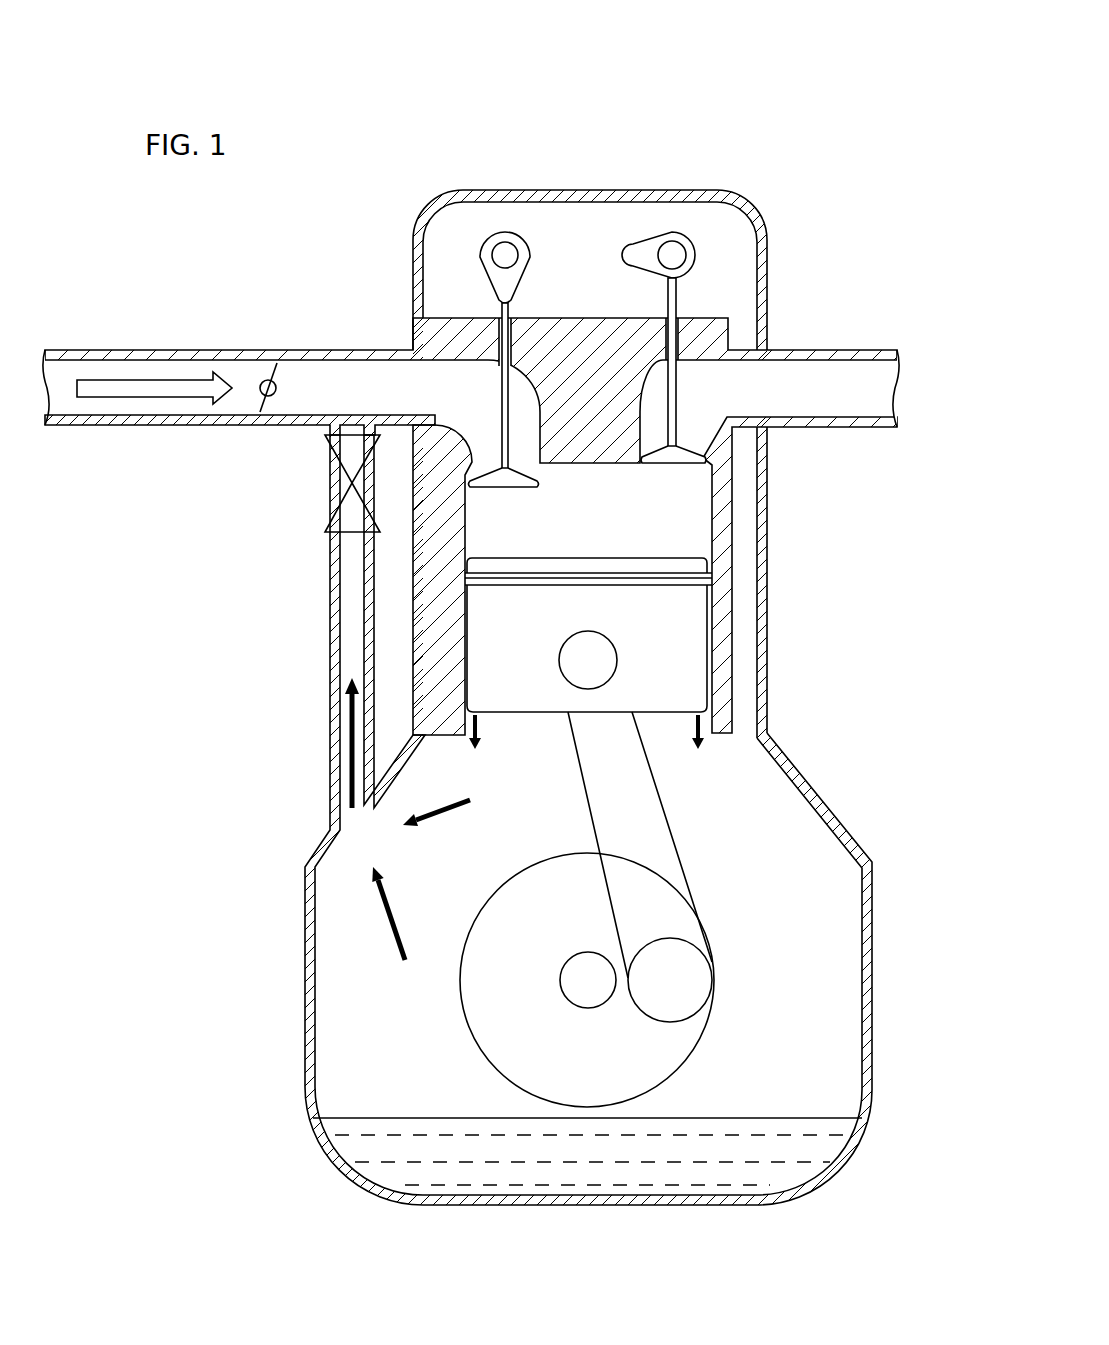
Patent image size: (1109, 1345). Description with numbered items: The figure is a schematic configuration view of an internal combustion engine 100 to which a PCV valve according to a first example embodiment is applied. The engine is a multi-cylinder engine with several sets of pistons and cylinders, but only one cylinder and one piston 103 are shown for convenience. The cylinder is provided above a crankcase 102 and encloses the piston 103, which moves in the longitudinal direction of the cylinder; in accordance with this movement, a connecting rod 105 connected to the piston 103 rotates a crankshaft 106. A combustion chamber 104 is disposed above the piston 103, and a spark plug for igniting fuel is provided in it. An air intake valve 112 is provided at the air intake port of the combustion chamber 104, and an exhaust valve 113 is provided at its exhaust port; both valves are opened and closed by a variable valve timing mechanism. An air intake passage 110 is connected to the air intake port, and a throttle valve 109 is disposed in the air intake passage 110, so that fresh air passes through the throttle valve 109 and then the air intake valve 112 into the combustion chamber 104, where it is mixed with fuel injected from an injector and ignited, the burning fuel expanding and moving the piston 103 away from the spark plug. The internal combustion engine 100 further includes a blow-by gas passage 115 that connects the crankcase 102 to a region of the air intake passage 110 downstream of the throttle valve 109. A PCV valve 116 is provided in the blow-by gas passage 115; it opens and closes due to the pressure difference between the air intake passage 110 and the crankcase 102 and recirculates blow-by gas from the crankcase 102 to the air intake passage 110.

The internal combustion engine 100 is at (795, 85).
The crankcase 102 is at (830, 812).
The piston 103 is at (664, 712).
The combustion chamber 104 is at (700, 528).
The connecting rod 105 is at (680, 855).
The crankshaft 106 is at (703, 1030).
The throttle valve 109 is at (262, 414).
The air intake passage 110 is at (133, 425).
The air intake valve 112 is at (513, 488).
The exhaust valve 113 is at (653, 466).
The blow-by gas passage 115 is at (332, 650).
The PCV valve 116 is at (333, 515).